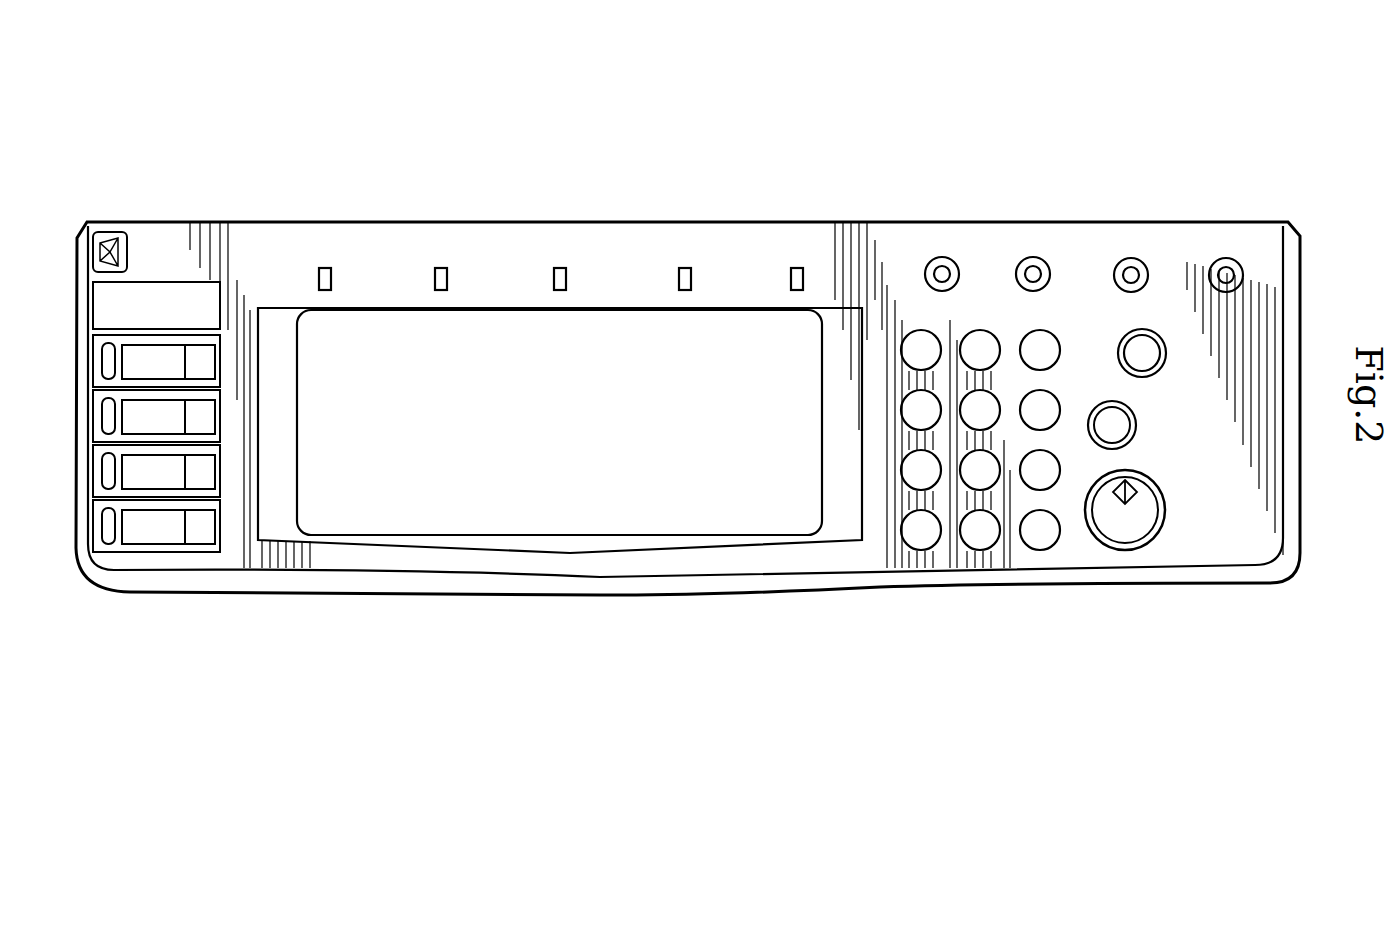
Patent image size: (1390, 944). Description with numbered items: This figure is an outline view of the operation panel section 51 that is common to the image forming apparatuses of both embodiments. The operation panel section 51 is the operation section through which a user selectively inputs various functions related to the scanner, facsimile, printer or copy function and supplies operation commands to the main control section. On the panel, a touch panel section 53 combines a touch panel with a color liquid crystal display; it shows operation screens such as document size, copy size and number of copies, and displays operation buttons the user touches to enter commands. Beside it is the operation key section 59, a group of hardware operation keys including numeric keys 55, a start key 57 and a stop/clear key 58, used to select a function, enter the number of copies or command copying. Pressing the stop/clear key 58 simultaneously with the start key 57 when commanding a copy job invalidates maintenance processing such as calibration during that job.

The operation panel section 51 is at (822, 191).
The touch panel section 53 is at (568, 488).
The numeric keys 55 is at (978, 552).
The start key 57 is at (1123, 541).
The stop/clear key 58 is at (1118, 422).
The operation key section 59 is at (1033, 562).